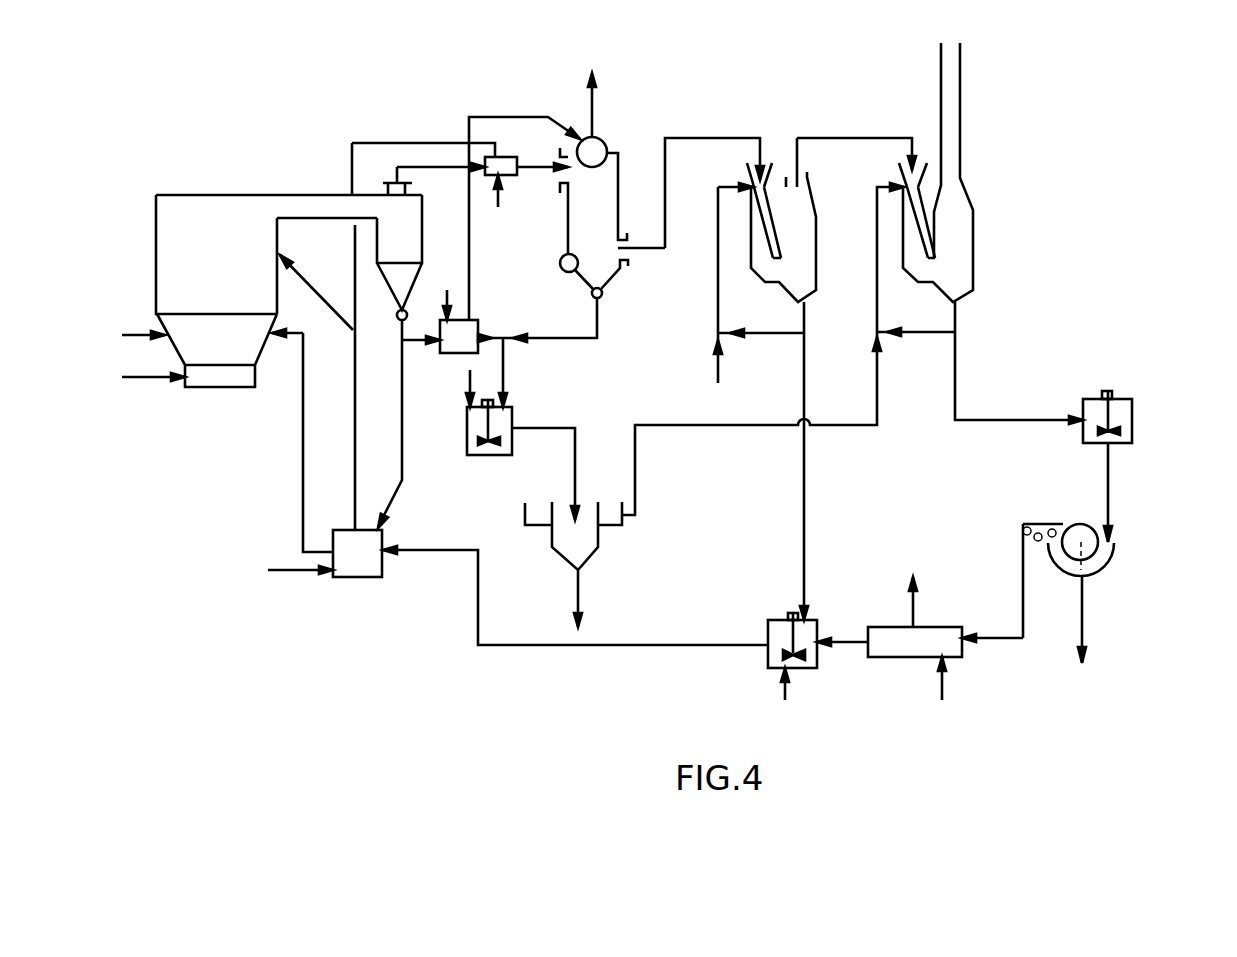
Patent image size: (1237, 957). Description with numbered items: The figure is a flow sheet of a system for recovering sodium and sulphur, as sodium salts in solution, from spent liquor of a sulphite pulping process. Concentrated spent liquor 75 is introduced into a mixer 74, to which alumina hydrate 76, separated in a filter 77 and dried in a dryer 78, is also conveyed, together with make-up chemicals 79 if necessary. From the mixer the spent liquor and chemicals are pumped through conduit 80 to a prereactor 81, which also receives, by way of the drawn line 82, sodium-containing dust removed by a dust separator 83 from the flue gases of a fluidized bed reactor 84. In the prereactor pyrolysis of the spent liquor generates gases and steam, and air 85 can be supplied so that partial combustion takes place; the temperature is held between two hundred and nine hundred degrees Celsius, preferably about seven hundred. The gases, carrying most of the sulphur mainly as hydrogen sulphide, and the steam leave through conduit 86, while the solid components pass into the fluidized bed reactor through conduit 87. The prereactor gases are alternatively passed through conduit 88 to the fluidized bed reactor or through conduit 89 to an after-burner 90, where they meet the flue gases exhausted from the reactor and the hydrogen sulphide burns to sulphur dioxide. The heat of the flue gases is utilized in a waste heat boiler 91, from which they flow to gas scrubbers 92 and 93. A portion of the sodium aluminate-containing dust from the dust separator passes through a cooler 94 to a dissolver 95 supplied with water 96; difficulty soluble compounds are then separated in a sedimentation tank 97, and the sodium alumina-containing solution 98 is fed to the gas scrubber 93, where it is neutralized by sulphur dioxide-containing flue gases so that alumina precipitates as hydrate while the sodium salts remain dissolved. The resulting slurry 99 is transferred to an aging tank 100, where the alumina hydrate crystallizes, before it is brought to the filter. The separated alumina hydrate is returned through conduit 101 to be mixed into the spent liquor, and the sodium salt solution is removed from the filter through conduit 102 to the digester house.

The mixer 74 is at (773, 657).
The concentrated spent liquor 75 is at (807, 580).
The alumina hydrate 76 is at (848, 643).
The filter 77 is at (1072, 533).
The dryer 78 is at (913, 648).
The make-up chemicals 79 is at (785, 688).
The conduit 80 is at (633, 645).
The prereactor 81 is at (357, 560).
The solids return line 82 is at (407, 475).
The dust separator 83 is at (408, 218).
The fluidized bed reactor 84 is at (178, 232).
The air 85 is at (278, 570).
The conduit 86 is at (355, 388).
The conduit 87 is at (303, 453).
The conduit 88 is at (318, 290).
The conduit 89 is at (368, 142).
The after-burner 90 is at (510, 176).
The waste heat boiler 91 is at (612, 197).
The gas scrubber 92 is at (813, 258).
The gas scrubber 93 is at (967, 215).
The cooler 94 is at (467, 327).
The dissolver 95 is at (505, 423).
The water 96 is at (468, 383).
The sedimentation tank 97 is at (583, 553).
The sodium alumina-containing solution 98 is at (838, 425).
The slurry 99 is at (1022, 420).
The aging tank 100 is at (1122, 412).
The conduit 101 is at (1012, 642).
The conduit 102 is at (1083, 597).